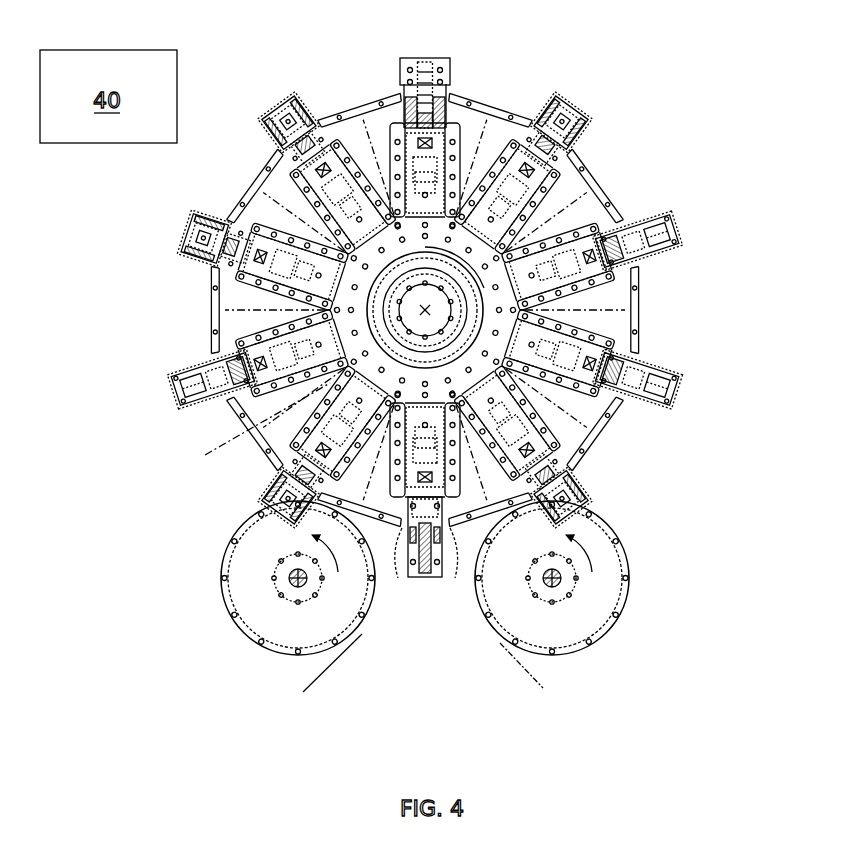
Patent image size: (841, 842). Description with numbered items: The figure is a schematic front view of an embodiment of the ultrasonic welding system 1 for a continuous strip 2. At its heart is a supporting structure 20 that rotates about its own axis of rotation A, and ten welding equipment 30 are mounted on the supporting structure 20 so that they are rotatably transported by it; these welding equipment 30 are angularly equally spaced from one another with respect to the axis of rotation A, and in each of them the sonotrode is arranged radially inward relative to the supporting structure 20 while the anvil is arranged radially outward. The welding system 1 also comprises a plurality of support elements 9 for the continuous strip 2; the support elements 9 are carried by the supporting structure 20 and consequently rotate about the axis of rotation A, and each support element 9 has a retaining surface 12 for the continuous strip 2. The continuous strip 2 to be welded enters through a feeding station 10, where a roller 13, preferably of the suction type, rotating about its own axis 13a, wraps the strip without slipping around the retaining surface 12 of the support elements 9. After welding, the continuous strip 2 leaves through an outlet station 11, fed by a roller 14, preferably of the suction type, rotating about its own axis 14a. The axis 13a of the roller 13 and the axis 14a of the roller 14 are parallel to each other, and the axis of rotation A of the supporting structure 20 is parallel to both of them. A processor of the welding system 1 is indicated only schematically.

The welding system 1 is at (654, 112).
The continuous strip 2 is at (332, 676).
The support element 9 is at (355, 105).
The feeding station 10 is at (399, 555).
The outlet station 11 is at (468, 542).
The retaining surface 12 is at (378, 108).
The roller 13 is at (270, 623).
The axis of rotation of the roller 13a is at (293, 587).
The roller 14 is at (577, 635).
The axis of rotation of the roller 14a is at (580, 590).
The supporting structure 20 is at (640, 268).
The welding equipment 30 is at (310, 105).
The axis of rotation A is at (257, 430).